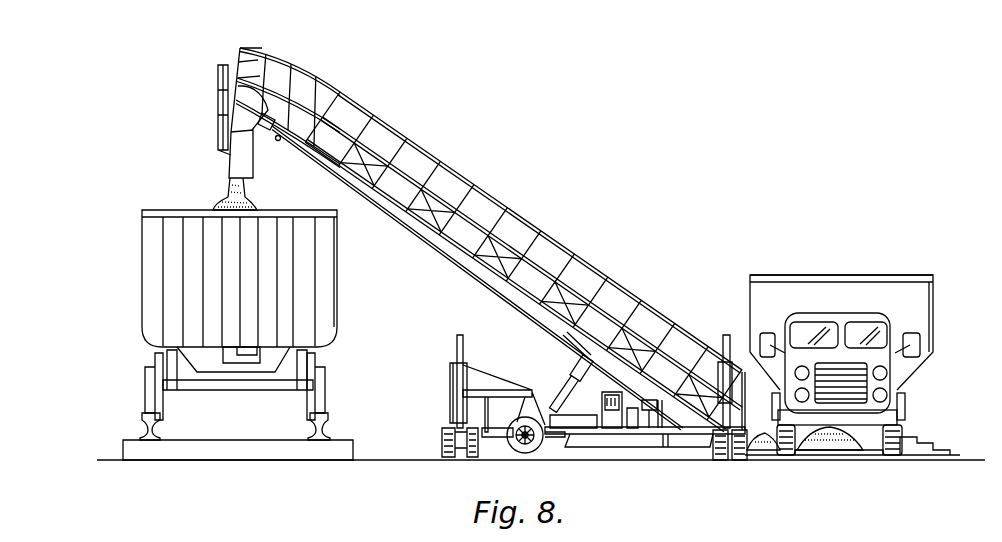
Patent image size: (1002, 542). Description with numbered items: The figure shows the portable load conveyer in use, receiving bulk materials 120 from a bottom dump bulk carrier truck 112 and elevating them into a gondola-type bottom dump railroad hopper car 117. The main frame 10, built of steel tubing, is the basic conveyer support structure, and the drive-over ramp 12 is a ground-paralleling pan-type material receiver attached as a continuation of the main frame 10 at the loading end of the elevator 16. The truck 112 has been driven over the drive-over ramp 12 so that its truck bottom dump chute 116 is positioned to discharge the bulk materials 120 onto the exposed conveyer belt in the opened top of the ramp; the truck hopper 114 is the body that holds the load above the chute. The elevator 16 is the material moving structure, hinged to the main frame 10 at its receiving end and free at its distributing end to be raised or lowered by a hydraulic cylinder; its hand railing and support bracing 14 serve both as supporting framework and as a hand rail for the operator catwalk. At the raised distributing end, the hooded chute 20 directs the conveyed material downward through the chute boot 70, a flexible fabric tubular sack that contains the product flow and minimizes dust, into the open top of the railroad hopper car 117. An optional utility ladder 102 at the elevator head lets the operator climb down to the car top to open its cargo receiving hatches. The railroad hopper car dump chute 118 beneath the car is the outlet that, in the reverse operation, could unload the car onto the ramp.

The main frame 10 is at (573, 436).
The drive-over ramp 12 is at (871, 363).
The hand railing and support bracing for elevator 14 is at (560, 250).
The elevator 16 is at (495, 240).
The hooded chute 20 is at (238, 70).
The chute boot 70 is at (240, 158).
The utility ladder 102 is at (220, 105).
The bottom dump bulk carrier truck 112 is at (907, 315).
The truck hopper 114 is at (817, 275).
The truck bottom dump chute 116 is at (862, 431).
The bottom dump railroad hopper car 117 is at (152, 322).
The railroad hopper car dump chute 118 is at (270, 360).
The bulk materials 120 is at (227, 197).